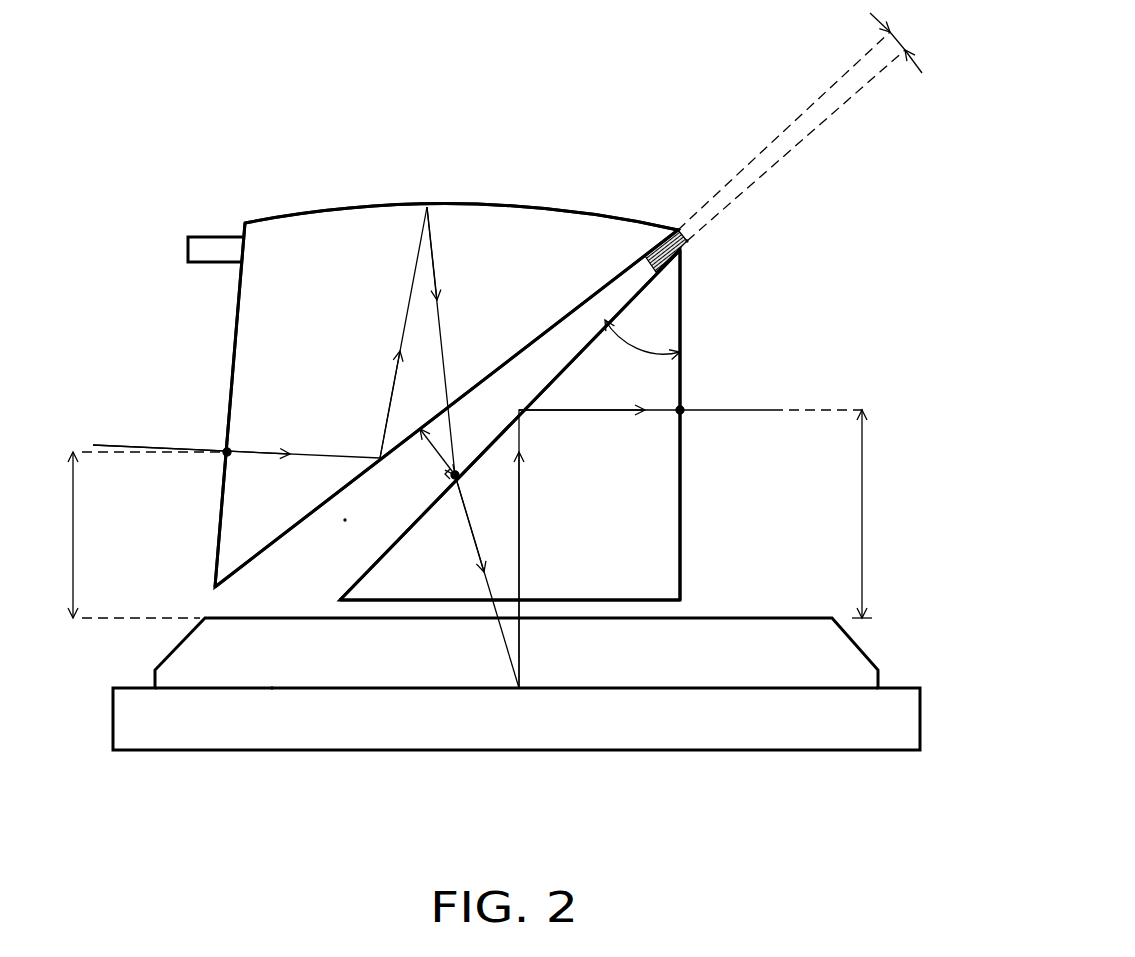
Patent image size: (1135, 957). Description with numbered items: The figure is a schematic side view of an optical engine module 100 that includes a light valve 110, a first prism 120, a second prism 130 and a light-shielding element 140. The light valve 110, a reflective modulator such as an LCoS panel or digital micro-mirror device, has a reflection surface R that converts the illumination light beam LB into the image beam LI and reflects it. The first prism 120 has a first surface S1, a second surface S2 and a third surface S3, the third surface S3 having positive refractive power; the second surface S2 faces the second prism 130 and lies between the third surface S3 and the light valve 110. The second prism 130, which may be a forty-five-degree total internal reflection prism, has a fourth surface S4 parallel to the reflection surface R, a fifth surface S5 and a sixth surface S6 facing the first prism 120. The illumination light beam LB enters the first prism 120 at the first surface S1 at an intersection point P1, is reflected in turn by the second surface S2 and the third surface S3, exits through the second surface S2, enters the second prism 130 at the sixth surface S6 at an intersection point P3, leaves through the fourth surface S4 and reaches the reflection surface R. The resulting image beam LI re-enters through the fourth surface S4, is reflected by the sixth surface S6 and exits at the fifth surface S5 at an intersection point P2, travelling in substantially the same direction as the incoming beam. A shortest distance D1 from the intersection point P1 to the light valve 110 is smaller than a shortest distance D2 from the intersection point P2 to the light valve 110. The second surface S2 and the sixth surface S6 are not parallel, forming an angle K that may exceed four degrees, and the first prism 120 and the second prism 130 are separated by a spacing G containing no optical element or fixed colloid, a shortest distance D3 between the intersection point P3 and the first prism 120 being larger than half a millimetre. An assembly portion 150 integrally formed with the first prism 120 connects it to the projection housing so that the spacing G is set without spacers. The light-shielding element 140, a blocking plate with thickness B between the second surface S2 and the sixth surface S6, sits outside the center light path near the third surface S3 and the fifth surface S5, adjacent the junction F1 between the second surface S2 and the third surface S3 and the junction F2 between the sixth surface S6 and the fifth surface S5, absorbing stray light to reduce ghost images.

The optical engine module 100 is at (948, 822).
The light valve 110 is at (803, 657).
The first prism 120 is at (258, 302).
The second prism 130 is at (665, 328).
The light-shielding element 140 is at (667, 273).
The assembly portion 150 is at (188, 249).
The first surface S1 is at (220, 528).
The second surface S2 is at (253, 567).
The third surface S3 is at (497, 205).
The fourth surface S4 is at (665, 605).
The fifth surface S5 is at (682, 497).
The sixth surface S6 is at (633, 297).
The junction F1 is at (677, 228).
The junction F2 is at (692, 246).
The angle K is at (800, 124).
The thickness B is at (642, 348).
The spacing G is at (345, 520).
The reflection surface R is at (272, 687).
The illumination light beam LB is at (127, 445).
The image beam LI is at (733, 410).
The intersection point P1 is at (222, 455).
The intersection point P2 is at (683, 413).
The intersection point P3 is at (455, 480).
The shortest distance D1 is at (134, 535).
The shortest distance D2 is at (876, 514).
The shortest distance D3 is at (455, 470).